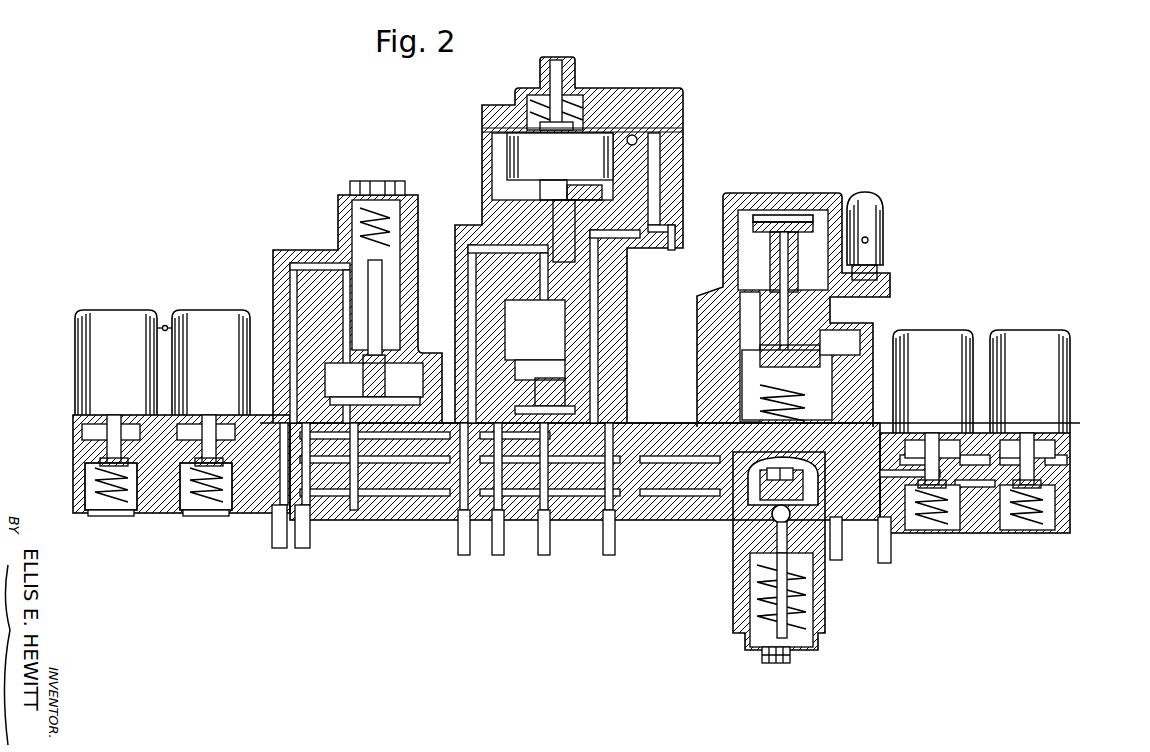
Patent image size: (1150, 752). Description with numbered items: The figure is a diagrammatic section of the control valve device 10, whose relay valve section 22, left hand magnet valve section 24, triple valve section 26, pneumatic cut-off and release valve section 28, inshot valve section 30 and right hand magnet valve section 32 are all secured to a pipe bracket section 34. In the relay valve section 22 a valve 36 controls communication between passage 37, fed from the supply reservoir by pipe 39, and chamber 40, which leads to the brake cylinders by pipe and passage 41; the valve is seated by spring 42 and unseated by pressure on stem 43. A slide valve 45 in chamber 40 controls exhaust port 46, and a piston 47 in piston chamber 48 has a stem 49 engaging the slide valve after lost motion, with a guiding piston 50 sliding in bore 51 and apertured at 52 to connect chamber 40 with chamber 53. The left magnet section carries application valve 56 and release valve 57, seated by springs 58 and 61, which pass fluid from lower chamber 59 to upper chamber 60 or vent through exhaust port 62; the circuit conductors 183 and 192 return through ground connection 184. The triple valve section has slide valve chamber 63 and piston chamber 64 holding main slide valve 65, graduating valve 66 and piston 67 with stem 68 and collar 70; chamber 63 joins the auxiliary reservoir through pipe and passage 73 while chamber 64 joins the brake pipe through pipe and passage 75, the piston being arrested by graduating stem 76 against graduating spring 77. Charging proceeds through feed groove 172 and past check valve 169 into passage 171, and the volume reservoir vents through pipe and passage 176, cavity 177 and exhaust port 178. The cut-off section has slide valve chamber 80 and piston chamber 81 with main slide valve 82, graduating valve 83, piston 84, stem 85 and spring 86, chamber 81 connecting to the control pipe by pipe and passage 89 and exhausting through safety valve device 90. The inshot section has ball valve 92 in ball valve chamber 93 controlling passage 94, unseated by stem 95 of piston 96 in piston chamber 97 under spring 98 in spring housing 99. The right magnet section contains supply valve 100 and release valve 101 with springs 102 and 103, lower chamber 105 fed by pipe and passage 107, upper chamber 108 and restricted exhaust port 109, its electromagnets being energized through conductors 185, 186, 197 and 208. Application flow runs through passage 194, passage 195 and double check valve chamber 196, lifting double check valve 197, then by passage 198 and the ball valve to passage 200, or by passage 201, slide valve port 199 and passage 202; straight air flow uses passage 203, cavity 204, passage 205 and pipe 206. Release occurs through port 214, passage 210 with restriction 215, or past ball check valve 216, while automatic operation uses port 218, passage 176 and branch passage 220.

The control valve device 10 is at (696, 519).
The relay valve section 22 is at (343, 192).
The left hand magnet valve section 24 is at (72, 386).
The triple valve section 26 is at (689, 104).
The pneumatic cut-off and release valve section 28 is at (772, 190).
The inshot valve section 30 is at (733, 628).
The right hand magnet valve section 32 is at (1073, 419).
The pipe bracket section 34 is at (336, 516).
The valve 36 is at (397, 222).
The passage 37 is at (357, 208).
The pipe 39 is at (272, 548).
The chamber 40 is at (400, 262).
The pipe and passage 41 is at (302, 548).
The spring 42 is at (392, 190).
The stem 43 is at (400, 240).
The slide valve 45 is at (403, 300).
The exhaust port 46 is at (398, 290).
The piston 47 is at (395, 387).
The piston chamber 48 is at (330, 412).
The stem 49 is at (410, 315).
The guiding piston 50 is at (398, 332).
The bore 51 is at (384, 318).
The aperture 52 is at (349, 387).
The chamber 53 is at (410, 352).
The application valve 56 is at (110, 466).
The release valve 57 is at (147, 485).
The spring 58 is at (112, 508).
The lower chamber 59 is at (92, 488).
The upper chamber 60 is at (95, 437).
The spring 61 is at (205, 500).
The exhaust port 62 is at (180, 412).
The slide valve chamber 63 is at (643, 207).
The piston chamber 64 is at (505, 118).
The main slide valve 65 is at (657, 230).
The graduating valve 66 is at (563, 365).
The piston 67 is at (557, 180).
The stem 68 is at (678, 241).
The collar 70 is at (554, 407).
The pipe and passage 73 is at (548, 522).
The pipe and passage 75 is at (610, 522).
The graduating stem 76 is at (548, 140).
The graduating spring 77 is at (568, 103).
The slide valve chamber 80 is at (830, 312).
The piston chamber 81 is at (860, 403).
The main slide valve 82 is at (778, 300).
The graduating valve 83 is at (788, 266).
The piston 84 is at (720, 378).
The stem 85 is at (783, 252).
The spring 86 is at (802, 411).
The pipe and passage 89 is at (840, 527).
The safety valve device 90 is at (860, 218).
The ball valve 92 is at (772, 520).
The ball valve chamber 93 is at (758, 518).
The passage 94 is at (817, 512).
The stem 95 is at (765, 545).
The piston 96 is at (762, 585).
The piston chamber 97 is at (795, 547).
The spring 98 is at (800, 637).
The spring housing 99 is at (785, 587).
The supply valve 100 is at (938, 515).
The release valve 101 is at (1035, 483).
The spring 102 is at (932, 530).
The spring 103 is at (1068, 516).
The lower chamber 105 is at (952, 498).
The pipe and passage 107 is at (890, 530).
The upper chamber 108 is at (950, 435).
The restricted exhaust port 109 is at (1065, 457).
The check valve 169 is at (636, 131).
The passage 171 is at (367, 462).
The feed groove 172 is at (490, 183).
The pipe and passage 176 is at (500, 522).
The cavity 177 is at (570, 285).
The exhaust port 178 is at (585, 258).
The conductor 183 is at (232, 287).
The ground connection 184 is at (167, 292).
The conductor 185 is at (913, 326).
The conductor 186 is at (967, 325).
The conductor 192 is at (82, 287).
The passage 194 is at (147, 517).
The passage 195 is at (350, 435).
The double check valve chamber 196 is at (660, 463).
The double check valve 197 is at (655, 423).
The passage 198 is at (683, 520).
The slide valve port 199 is at (743, 333).
The passage 200 is at (657, 503).
The passage 201 is at (745, 358).
The passage 202 is at (865, 327).
The passage 203 is at (485, 327).
The cavity 204 is at (547, 230).
The passage 205 is at (502, 240).
The pipe 206 is at (457, 517).
The conductor 208 is at (1103, 326).
The passage 210 is at (728, 293).
The slide valve port 214 is at (737, 287).
The restriction 215 is at (737, 268).
The ball check valve 216 is at (775, 398).
The port 218 is at (497, 340).
The branch passage 220 is at (546, 522).